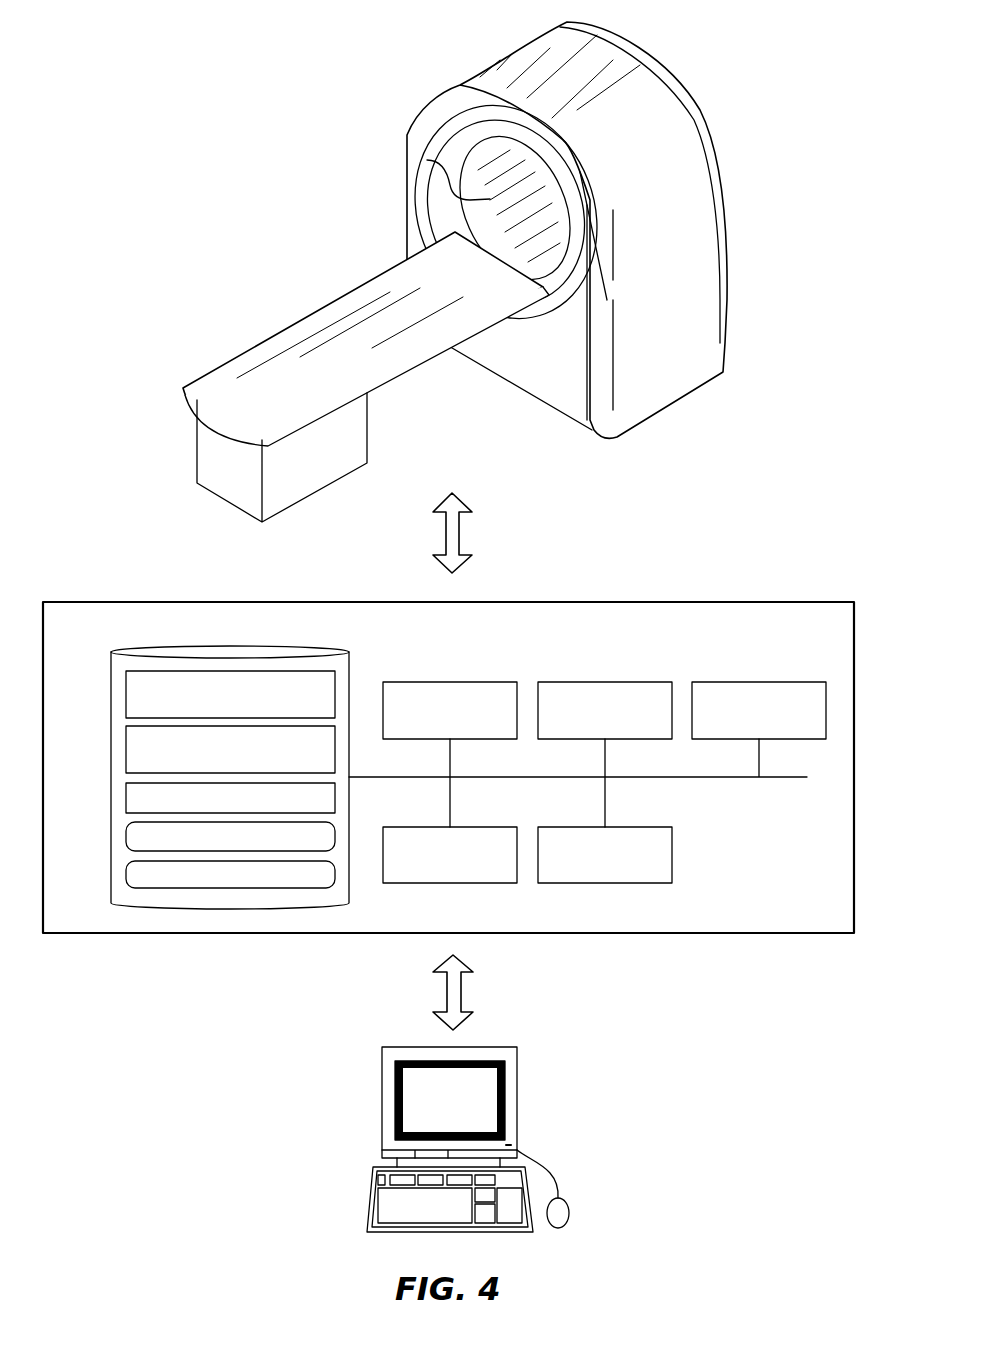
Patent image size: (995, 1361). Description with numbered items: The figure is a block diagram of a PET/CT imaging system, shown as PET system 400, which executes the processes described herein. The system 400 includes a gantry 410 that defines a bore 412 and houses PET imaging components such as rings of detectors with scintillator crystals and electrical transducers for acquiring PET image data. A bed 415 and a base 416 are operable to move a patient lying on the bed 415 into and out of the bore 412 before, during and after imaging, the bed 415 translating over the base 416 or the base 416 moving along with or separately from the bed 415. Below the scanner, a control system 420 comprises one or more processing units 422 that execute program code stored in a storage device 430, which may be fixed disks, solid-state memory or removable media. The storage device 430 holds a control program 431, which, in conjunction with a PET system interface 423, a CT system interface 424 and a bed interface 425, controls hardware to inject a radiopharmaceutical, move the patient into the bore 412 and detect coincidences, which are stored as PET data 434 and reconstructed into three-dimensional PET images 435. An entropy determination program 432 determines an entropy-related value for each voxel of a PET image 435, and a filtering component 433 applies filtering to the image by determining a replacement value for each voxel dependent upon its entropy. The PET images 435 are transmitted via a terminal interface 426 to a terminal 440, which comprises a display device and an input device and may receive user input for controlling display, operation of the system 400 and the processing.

The PET system 400 is at (288, 44).
The gantry 410 is at (480, 66).
The bore 412 is at (440, 160).
The bed 415 is at (277, 330).
The base 416 is at (358, 437).
The control system 420 is at (831, 632).
The processing units 422 is at (486, 827).
The PET system interface 423 is at (478, 682).
The CT system interface 424 is at (631, 682).
The bed interface 425 is at (783, 682).
The terminal interface 426 is at (640, 827).
The storage device 430 is at (283, 651).
The control program 431 is at (123, 692).
The entropy determination program 432 is at (123, 752).
The filtering component 433 is at (123, 795).
The PET data 434 is at (123, 830).
The PET images 435 is at (123, 873).
The terminal 440 is at (571, 1097).